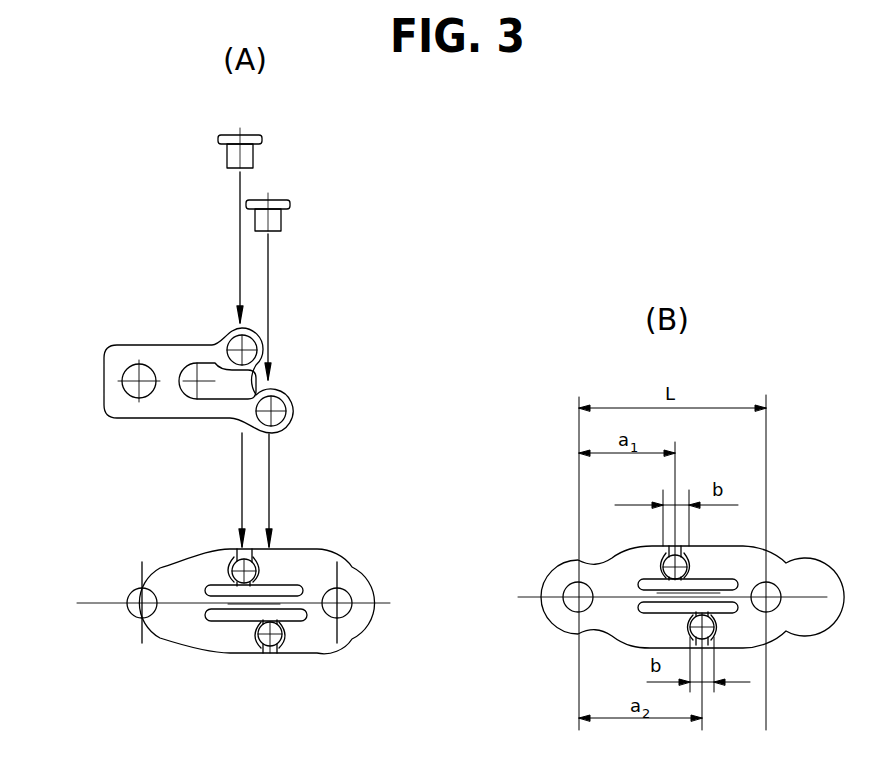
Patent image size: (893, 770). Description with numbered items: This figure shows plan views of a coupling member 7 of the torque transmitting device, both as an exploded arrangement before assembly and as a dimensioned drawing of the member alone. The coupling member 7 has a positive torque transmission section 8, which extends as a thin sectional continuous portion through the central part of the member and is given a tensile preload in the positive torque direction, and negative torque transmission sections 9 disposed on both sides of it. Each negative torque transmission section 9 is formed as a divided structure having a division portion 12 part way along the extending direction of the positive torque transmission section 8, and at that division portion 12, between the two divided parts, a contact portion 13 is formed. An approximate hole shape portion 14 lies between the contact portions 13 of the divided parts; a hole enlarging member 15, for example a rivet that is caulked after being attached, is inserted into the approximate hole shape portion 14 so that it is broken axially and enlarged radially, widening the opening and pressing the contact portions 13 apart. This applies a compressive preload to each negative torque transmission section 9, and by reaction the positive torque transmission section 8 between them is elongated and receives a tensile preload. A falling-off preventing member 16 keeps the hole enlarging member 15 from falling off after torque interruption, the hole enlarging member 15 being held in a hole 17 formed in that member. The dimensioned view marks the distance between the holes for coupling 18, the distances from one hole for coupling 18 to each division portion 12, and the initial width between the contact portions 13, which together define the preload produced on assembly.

The coupling member 7 is at (321, 547).
The positive torque transmission section 8 is at (228, 600).
The negative torque transmission section 9 is at (273, 556).
The division portion 12 is at (238, 548).
The contact portion 13 is at (228, 563).
The approximate hole shape portion 14 is at (245, 562).
The hole enlarging member 15 is at (262, 140).
The falling-off preventing member 16 is at (165, 340).
The hole 17 is at (257, 346).
The hole for coupling 18 is at (570, 585).